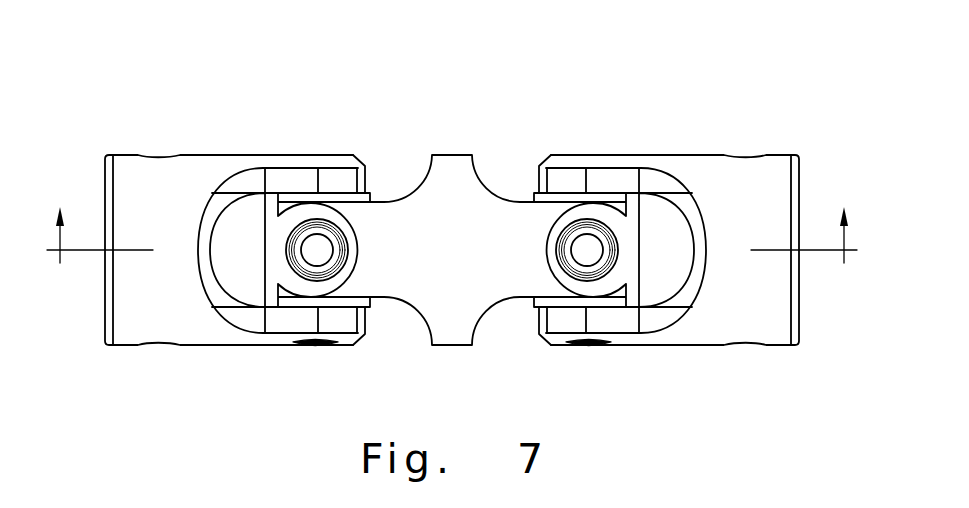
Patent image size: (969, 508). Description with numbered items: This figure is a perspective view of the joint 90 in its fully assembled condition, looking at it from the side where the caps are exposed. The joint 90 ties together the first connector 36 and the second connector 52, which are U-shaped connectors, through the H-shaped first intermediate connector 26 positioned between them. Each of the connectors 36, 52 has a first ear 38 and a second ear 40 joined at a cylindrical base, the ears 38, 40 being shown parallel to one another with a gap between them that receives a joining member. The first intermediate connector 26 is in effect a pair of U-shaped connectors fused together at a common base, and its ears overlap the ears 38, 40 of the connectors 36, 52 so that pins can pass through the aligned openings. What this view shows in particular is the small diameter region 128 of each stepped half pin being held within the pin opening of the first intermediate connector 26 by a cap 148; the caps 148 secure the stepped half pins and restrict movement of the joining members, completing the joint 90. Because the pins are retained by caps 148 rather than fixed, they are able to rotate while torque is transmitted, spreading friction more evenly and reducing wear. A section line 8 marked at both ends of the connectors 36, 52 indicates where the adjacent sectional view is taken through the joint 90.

The joint 90 is at (431, 108).
The second connector 52 is at (105, 308).
The first connector 36 is at (800, 300).
The first ear 38 is at (292, 156).
The second ear 40 is at (260, 346).
The first intermediate connector 26 is at (455, 157).
The small diameter region 128 is at (318, 250).
The second cap 148 is at (323, 273).
The section line 8- 8 is at (452, 221).